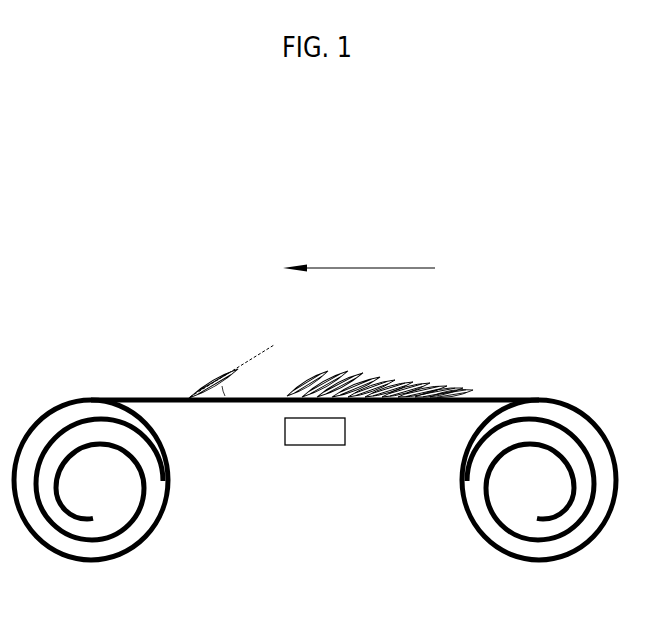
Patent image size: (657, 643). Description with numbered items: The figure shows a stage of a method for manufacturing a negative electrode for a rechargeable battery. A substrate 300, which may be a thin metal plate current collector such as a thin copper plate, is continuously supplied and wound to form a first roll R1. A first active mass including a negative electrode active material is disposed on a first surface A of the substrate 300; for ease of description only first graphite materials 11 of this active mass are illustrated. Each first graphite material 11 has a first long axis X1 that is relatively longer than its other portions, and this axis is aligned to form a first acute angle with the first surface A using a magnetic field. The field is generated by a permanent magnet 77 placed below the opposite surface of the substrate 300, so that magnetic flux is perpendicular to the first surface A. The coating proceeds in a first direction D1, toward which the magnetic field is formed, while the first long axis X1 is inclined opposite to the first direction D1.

The first graphite material 11 is at (213, 396).
The first long axis X1 is at (244, 362).
The substrate 300 is at (171, 404).
The permanent magnet 77 is at (313, 446).
The first roll R1 is at (543, 497).
The first direction D1 is at (372, 271).
The first surface A is at (503, 376).